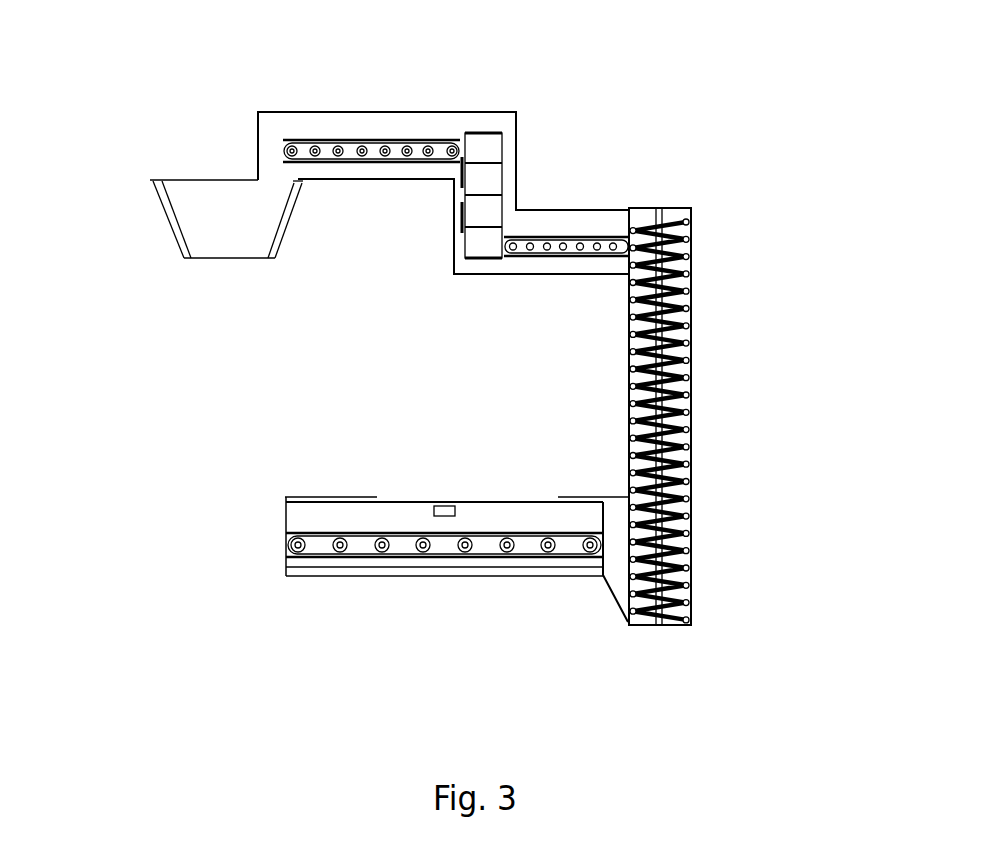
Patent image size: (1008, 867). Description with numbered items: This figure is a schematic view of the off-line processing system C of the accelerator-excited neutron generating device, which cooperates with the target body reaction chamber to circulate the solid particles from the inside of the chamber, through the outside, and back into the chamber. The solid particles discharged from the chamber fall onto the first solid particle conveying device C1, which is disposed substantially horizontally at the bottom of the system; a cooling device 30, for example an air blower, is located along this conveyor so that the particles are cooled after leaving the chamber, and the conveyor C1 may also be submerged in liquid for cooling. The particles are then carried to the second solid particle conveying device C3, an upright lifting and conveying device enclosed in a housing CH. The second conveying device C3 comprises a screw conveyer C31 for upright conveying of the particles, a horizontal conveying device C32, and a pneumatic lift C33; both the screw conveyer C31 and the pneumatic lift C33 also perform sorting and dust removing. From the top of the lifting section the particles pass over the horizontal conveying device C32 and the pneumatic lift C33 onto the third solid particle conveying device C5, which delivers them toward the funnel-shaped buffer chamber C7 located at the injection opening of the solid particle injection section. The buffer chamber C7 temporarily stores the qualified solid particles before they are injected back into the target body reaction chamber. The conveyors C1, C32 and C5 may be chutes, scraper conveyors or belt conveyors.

The off-line processing system C is at (762, 190).
The first solid particle conveying device C1 is at (452, 560).
The second solid particle conveying device C3 is at (723, 418).
The screw conveyer C31 is at (692, 302).
The horizontal conveying device C32 is at (582, 235).
The pneumatic lift C33 is at (503, 177).
The third solid particle conveying device C5 is at (398, 140).
The buffer chamber C7 is at (165, 242).
The housing CH is at (691, 506).
The cooling device 30 is at (452, 505).